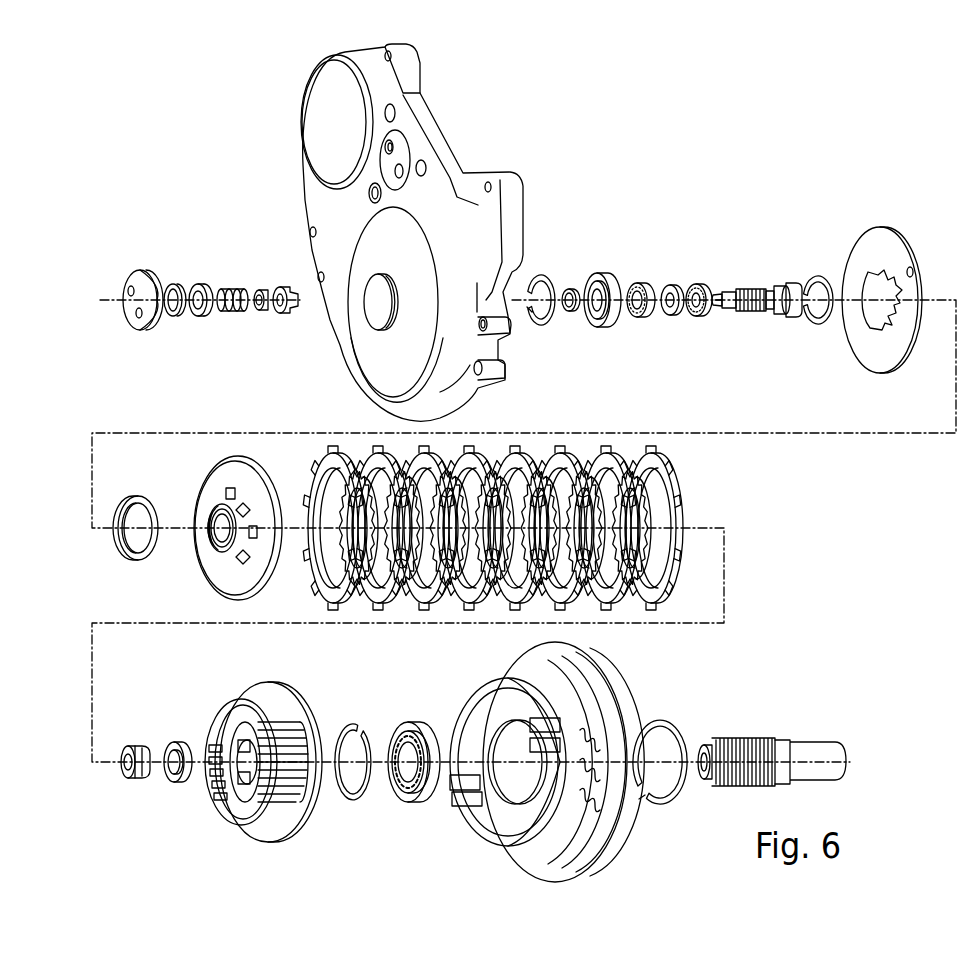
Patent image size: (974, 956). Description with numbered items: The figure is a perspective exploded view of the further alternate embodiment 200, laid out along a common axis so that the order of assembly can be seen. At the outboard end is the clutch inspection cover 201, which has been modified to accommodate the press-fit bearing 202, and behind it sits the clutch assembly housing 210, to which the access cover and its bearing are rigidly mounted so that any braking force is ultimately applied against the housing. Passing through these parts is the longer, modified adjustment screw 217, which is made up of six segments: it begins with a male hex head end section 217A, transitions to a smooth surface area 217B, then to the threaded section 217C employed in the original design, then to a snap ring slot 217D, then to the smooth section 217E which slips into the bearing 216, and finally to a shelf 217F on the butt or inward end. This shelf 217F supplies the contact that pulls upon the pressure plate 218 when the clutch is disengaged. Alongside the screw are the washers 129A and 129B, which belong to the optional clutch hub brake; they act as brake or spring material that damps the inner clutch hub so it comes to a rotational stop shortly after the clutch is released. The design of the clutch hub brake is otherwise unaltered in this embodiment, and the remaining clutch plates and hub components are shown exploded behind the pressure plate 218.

The further alternate embodiment 200 is at (190, 146).
The clutch inspection cover 201 is at (140, 275).
The press-fit bearing 202 is at (200, 289).
The clutch assembly housing 210 is at (445, 136).
The bearing 216 is at (640, 283).
The washer 129A is at (670, 318).
The washer 129B is at (697, 286).
The adjustment screw 217 is at (745, 244).
The male hex head end section 217A is at (720, 306).
The smooth surface area 217B is at (734, 292).
The threaded section 217C is at (752, 325).
The snap ring slot 217D is at (784, 313).
The smooth section 217E is at (782, 290).
The shelf 217F is at (822, 279).
The pressure plate 218 is at (200, 472).